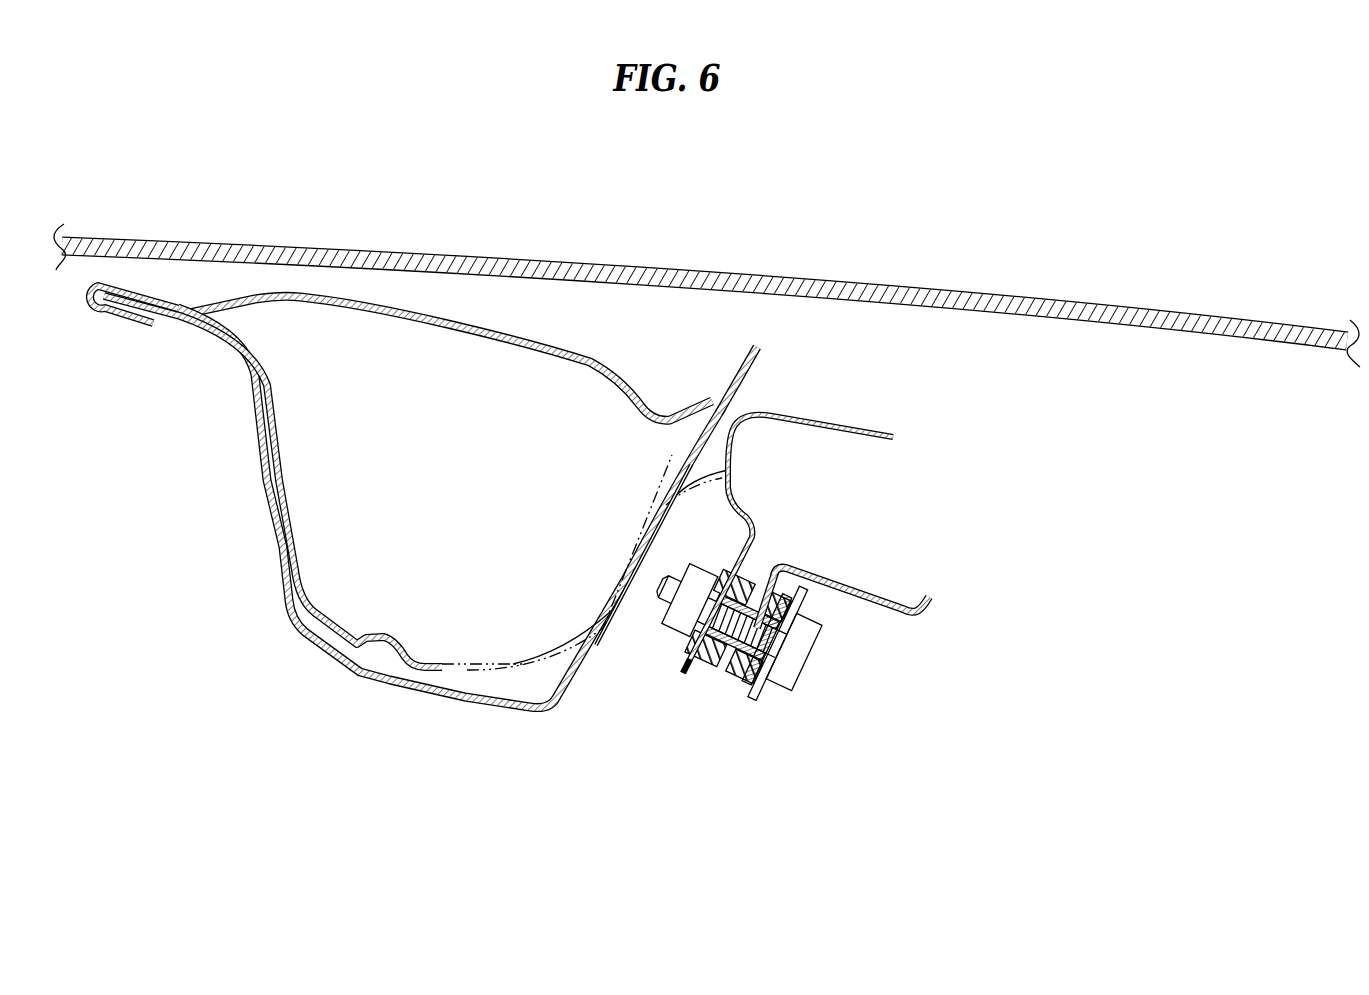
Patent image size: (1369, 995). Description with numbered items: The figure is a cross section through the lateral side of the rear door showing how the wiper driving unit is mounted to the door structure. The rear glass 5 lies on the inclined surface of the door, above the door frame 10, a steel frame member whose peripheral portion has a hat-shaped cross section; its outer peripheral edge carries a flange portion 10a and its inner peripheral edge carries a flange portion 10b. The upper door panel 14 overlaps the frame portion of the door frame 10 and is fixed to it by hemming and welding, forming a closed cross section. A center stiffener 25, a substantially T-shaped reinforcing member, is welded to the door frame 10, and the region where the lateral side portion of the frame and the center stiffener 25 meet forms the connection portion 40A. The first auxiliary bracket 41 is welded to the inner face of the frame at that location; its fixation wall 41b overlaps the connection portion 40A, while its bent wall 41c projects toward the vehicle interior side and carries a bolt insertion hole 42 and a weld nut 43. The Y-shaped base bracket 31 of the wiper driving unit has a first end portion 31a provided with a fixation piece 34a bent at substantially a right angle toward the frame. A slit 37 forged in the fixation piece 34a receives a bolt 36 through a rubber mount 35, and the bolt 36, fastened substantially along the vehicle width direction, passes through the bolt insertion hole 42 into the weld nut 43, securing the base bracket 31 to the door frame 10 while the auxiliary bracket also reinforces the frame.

The rear glass 5 is at (995, 291).
The upper door panel 14 is at (443, 308).
The door frame 10 is at (459, 540).
The flange portion 10a is at (169, 328).
The flange portion 10b is at (762, 354).
The center stiffener 25 is at (296, 461).
The connection portion 40A is at (632, 535).
The first auxiliary bracket 41 is at (782, 558).
The fixation wall 41b is at (645, 512).
The bent wall 41c is at (680, 678).
The weld nut 43 is at (678, 632).
The bolt insertion hole 42 is at (712, 630).
The rubber mount 35 is at (738, 695).
The fixation piece 34a is at (764, 570).
The slit 37 is at (768, 603).
The bolt 36 is at (793, 680).
The base bracket 31 is at (886, 553).
The first end portion 31a is at (886, 553).